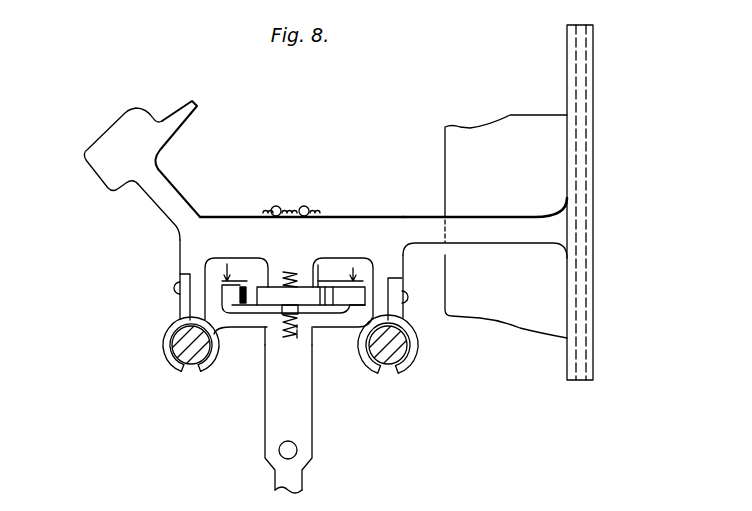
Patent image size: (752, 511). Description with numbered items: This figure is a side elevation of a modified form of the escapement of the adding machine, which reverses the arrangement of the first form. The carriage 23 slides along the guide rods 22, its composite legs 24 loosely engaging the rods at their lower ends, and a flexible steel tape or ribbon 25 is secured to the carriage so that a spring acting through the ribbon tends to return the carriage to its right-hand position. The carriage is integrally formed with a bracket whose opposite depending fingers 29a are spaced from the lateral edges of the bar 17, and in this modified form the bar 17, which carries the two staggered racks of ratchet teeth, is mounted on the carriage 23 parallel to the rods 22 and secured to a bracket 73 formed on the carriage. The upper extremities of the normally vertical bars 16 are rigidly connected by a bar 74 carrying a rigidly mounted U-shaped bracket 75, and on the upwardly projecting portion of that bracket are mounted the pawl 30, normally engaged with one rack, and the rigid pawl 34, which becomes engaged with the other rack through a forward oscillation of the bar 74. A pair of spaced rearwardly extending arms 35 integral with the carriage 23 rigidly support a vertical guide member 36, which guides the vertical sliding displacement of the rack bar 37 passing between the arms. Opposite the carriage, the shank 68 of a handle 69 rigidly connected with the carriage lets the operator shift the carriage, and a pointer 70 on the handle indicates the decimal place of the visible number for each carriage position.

The bars 16 is at (290, 478).
The bar 17 is at (268, 295).
The guide rods 22 is at (189, 362).
The carriage 23 is at (235, 232).
The composite legs 24 is at (180, 321).
The flexible tape or ribbon 25 is at (290, 207).
The depending fingers 29a is at (228, 313).
The pawl 30 is at (333, 296).
The rigid pawl 34 is at (243, 290).
The rearwardly extending arms 35 is at (485, 232).
The vertical guide member 36 is at (593, 150).
The rack bar 37 is at (506, 226).
The shank 68 is at (172, 207).
The handle 69 is at (102, 153).
The pointer 70 is at (183, 119).
The bracket 73 is at (290, 296).
The bar 74 is at (273, 335).
The U-shaped bracket 75 is at (308, 320).